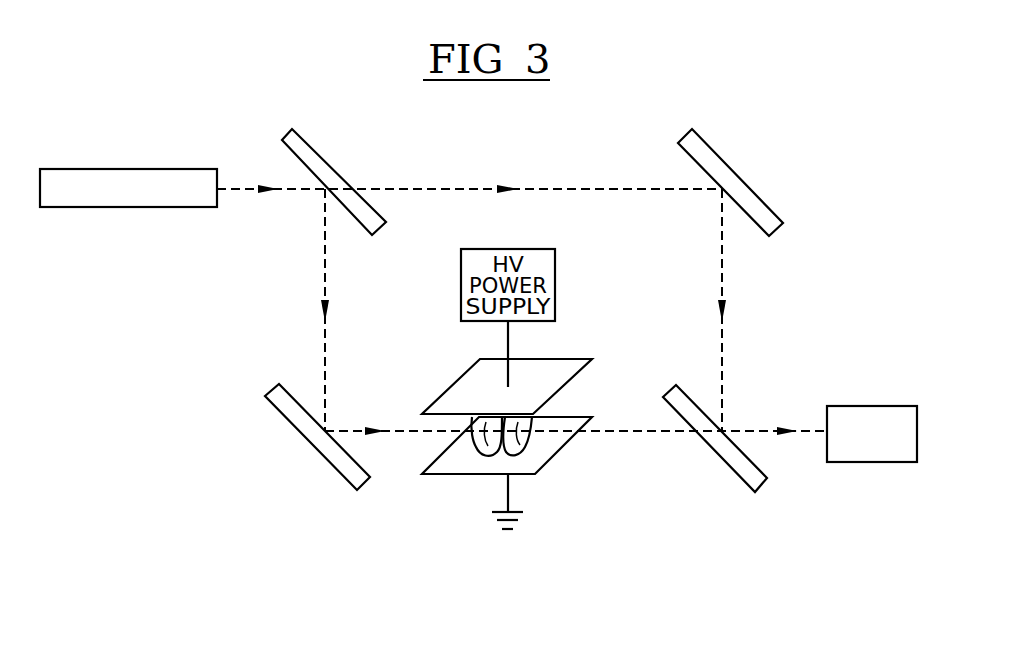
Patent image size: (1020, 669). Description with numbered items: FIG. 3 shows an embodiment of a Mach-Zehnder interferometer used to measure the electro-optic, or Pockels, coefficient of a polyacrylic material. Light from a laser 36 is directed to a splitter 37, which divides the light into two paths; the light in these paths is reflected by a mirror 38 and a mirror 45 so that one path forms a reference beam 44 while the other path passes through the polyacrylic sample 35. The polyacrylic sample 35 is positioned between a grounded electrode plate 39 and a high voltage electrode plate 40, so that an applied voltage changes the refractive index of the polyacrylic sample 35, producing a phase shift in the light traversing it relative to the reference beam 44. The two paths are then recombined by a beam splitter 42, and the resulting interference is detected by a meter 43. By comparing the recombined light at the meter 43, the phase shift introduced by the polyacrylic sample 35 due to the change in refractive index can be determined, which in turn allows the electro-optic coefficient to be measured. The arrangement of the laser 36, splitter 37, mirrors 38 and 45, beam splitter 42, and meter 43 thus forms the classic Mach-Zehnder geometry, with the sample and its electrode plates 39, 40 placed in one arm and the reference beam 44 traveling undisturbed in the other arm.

The polyacrylic sample 35 is at (532, 437).
The laser 36 is at (130, 169).
The splitter 37 is at (282, 141).
The mirror 38 is at (265, 396).
The grounded electrode plate 39 is at (455, 474).
The high voltage electrode plate 40 is at (453, 400).
The beam splitter 42 is at (767, 478).
The meter 43 is at (855, 406).
The reference beam 44 is at (722, 245).
The mirror 45 is at (783, 222).